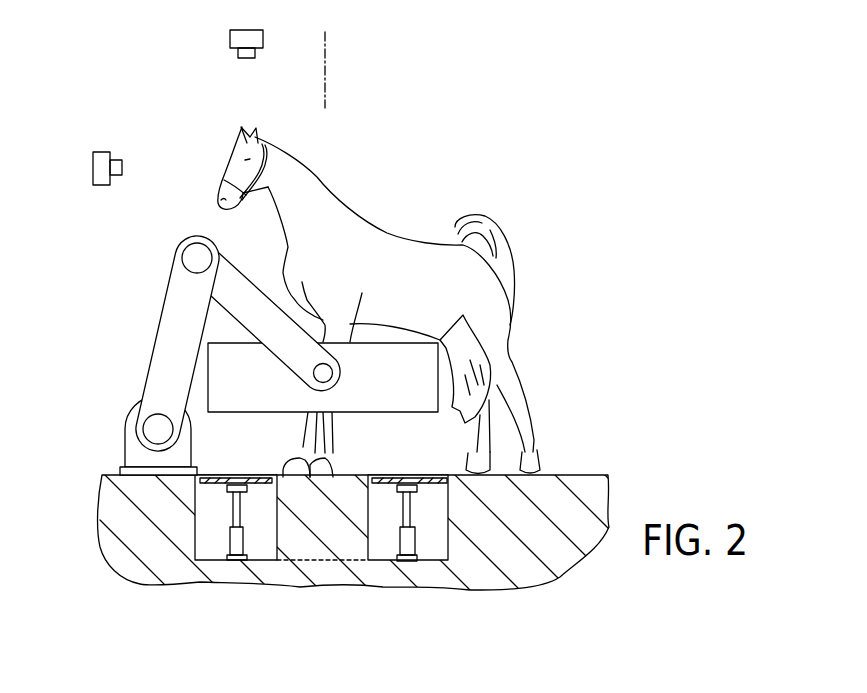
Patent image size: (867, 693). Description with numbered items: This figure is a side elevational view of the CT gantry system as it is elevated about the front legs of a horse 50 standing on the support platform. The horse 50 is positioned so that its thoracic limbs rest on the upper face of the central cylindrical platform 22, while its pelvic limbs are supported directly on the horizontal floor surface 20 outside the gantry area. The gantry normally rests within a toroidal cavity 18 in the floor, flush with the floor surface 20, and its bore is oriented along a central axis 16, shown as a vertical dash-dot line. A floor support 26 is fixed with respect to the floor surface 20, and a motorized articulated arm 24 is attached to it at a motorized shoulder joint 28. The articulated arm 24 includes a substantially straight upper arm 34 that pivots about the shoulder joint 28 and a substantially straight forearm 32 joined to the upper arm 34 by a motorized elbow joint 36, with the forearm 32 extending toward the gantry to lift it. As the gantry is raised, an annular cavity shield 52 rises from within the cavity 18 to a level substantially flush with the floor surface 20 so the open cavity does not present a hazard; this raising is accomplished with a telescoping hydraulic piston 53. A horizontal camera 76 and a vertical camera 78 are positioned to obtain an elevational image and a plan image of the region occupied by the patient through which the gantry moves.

The central axis 16 is at (325, 65).
The toroidal cavity 18 is at (448, 524).
The floor surface 20 is at (110, 475).
The central cylindrical platform 22 is at (290, 480).
The motorized articulated arm 24 is at (197, 331).
The floor support 26 is at (137, 455).
The motorized shoulder joint 28 is at (157, 427).
The forearm 32 is at (242, 283).
The upper arm 34 is at (172, 350).
The motorized elbow joint 36 is at (190, 253).
The horse 50 is at (357, 218).
The annular cavity shield 52 is at (415, 478).
The telescoping hydraulic piston 53 is at (400, 540).
The horizontal camera 76 is at (92, 163).
The vertical camera 78 is at (228, 33).